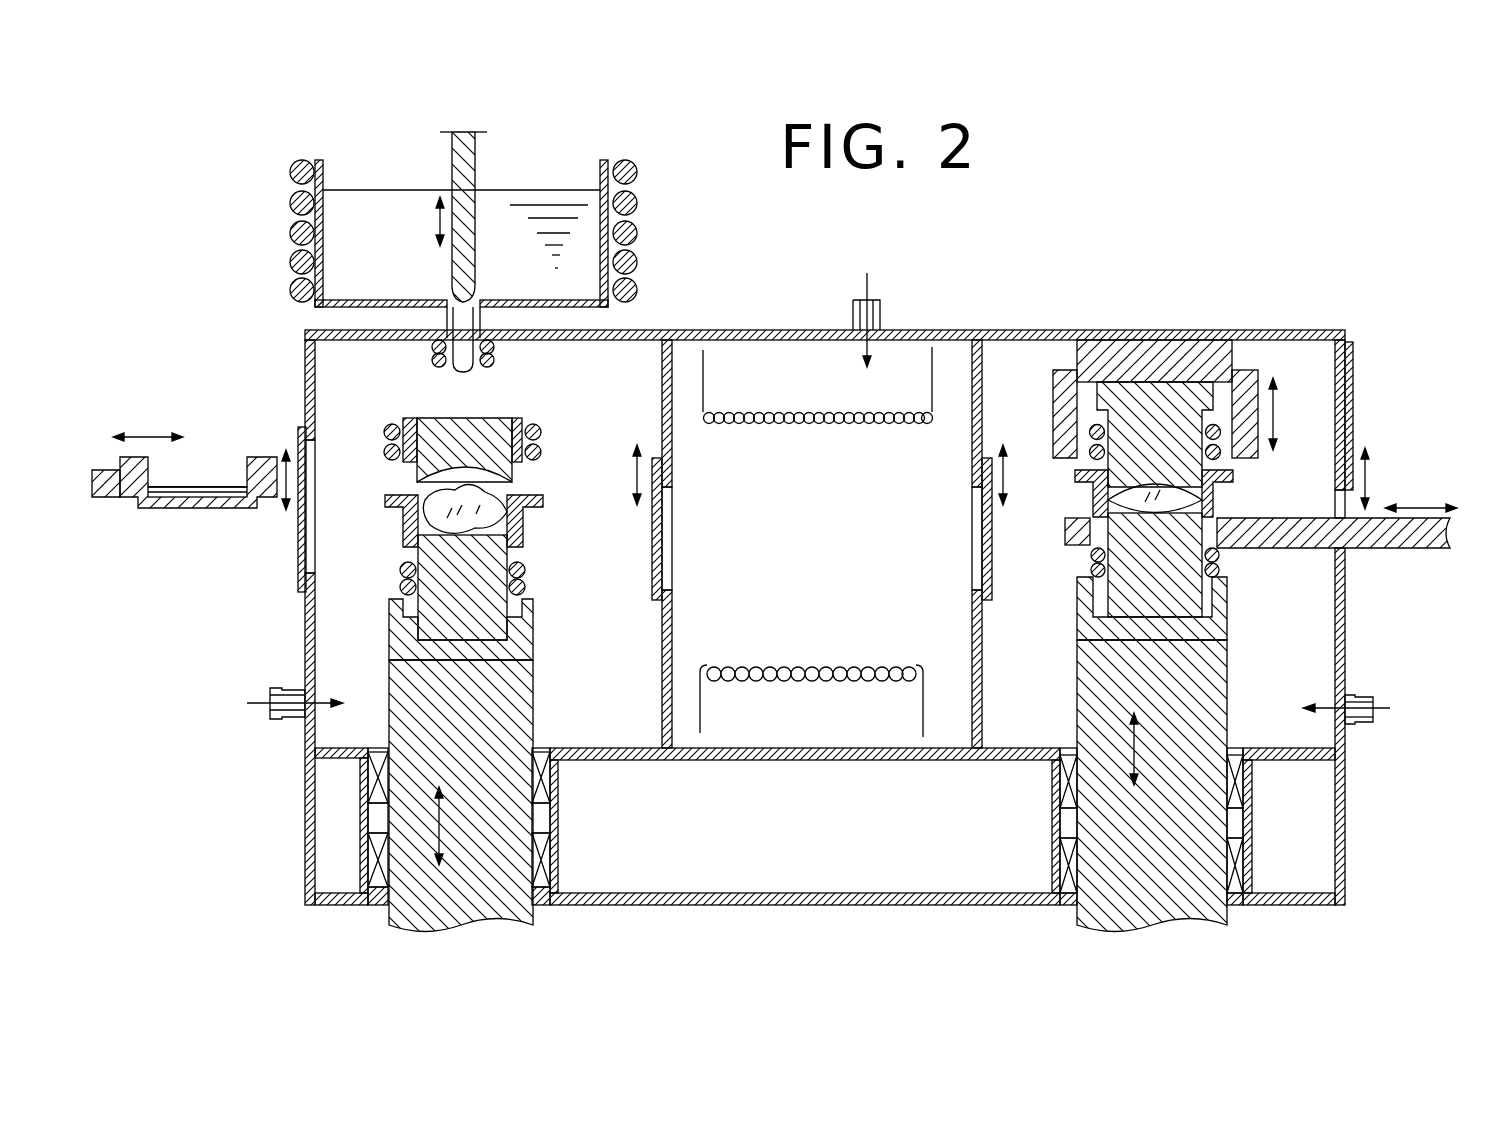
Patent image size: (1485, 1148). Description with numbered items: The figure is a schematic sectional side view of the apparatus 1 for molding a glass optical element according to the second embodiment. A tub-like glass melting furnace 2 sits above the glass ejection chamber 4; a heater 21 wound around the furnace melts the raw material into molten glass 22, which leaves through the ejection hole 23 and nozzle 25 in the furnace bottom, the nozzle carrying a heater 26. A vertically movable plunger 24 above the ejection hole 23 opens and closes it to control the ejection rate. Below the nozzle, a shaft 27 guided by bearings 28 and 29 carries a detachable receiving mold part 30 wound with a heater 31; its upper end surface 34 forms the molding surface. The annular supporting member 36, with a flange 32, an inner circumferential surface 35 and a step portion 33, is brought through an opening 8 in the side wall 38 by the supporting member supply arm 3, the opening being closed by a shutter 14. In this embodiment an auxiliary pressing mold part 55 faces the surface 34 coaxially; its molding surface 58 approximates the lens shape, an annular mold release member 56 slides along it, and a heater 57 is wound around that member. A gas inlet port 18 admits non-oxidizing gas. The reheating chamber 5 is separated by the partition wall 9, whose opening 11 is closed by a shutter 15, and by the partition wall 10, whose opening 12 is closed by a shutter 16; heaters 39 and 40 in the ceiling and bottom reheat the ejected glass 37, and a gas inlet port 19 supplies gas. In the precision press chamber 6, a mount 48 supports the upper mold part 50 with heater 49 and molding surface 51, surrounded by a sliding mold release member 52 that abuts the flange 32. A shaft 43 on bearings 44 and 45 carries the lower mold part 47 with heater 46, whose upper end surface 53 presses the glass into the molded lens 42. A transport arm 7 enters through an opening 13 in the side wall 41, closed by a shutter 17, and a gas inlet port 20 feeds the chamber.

The apparatus 1 is at (1268, 241).
The glass melting furnace 2 is at (640, 138).
The supporting member supply arm 3 is at (105, 485).
The glass ejection chamber 4 is at (350, 389).
The reheating chamber 5 is at (950, 398).
The precision press chamber 6 is at (1304, 380).
The transport arm 7 is at (1438, 540).
The opening 8 is at (297, 462).
The partition wall 9 is at (676, 362).
The partition wall 10 is at (992, 360).
The opening 11 is at (687, 538).
The opening 12 is at (975, 512).
The opening 13 is at (1345, 563).
The shutter 14 is at (300, 548).
The shutter 15 is at (655, 470).
The shutter 16 is at (1000, 580).
The shutter 17 is at (1352, 410).
The gas inlet port 18 is at (280, 695).
The gas inlet port 19 is at (880, 315).
The gas inlet port 20 is at (1365, 695).
The heater 21 is at (292, 250).
The molten glass 22 is at (412, 200).
The ejection hole 23 is at (470, 298).
The plunger 24 is at (470, 183).
The nozzle 25 is at (450, 368).
The heater 26 is at (495, 358).
The shaft 27 is at (500, 680).
The bearing 28 is at (553, 795).
The bearing 29 is at (553, 865).
The receiving mold part 30 is at (500, 628).
The heater 31 is at (527, 590).
The flange 32 is at (560, 508).
The step portion 33 is at (400, 545).
The upper end surface 34 is at (410, 525).
The inner circumferential surface 35 is at (507, 530).
The supporting member 36 is at (523, 497).
The ejected glass 37 is at (440, 510).
The side wall 38 is at (303, 622).
The heater 39 is at (840, 425).
The heater 40 is at (835, 665).
The side wall 41 is at (1345, 640).
The molded lens 42 is at (1185, 500).
The shaft 43 is at (1200, 652).
The bearing 44 is at (1050, 790).
The bearing 45 is at (1050, 865).
The heater 46 is at (1215, 560).
The lower mold part 47 is at (1112, 600).
The mount 48 is at (1175, 350).
The heater 49 is at (1095, 462).
The upper mold part 50 is at (1098, 380).
The molding surface 51 is at (1135, 490).
The mold release member 52 is at (1242, 385).
The upper end surface 53 is at (1087, 505).
The auxiliary pressing mold part 55 is at (522, 409).
The mold release member 56 is at (406, 470).
The heater 57 is at (543, 437).
The molding surface 58 is at (478, 470).